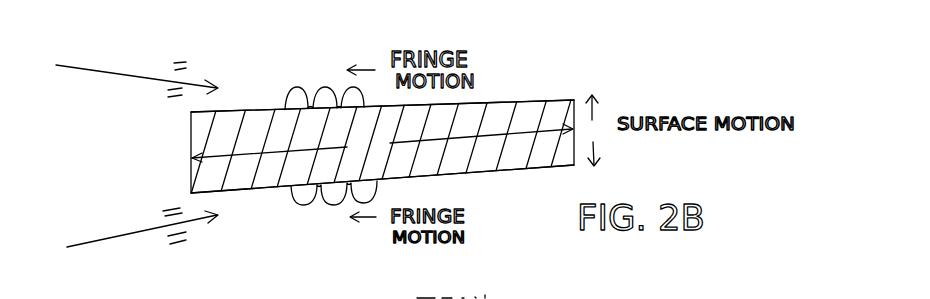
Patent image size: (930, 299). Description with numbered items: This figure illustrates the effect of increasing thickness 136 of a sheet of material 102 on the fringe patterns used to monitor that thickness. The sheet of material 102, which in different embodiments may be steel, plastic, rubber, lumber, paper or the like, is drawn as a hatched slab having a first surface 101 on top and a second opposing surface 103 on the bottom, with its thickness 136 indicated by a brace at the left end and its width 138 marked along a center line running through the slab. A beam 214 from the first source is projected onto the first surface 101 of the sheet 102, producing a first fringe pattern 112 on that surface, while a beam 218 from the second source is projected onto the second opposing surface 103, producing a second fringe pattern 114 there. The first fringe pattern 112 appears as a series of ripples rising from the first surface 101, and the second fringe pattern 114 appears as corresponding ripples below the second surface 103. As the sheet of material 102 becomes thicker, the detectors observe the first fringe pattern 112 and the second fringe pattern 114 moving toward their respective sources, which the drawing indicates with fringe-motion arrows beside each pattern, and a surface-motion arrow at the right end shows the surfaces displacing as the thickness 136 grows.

The first surface 101 is at (532, 100).
The sheet of material 102 is at (493, 84).
The second opposing surface 103 is at (522, 172).
The first fringe pattern 112 is at (286, 86).
The second fringe pattern 114 is at (294, 210).
The thickness 136 is at (183, 111).
The width 138 is at (382, 143).
The beam 214 is at (115, 72).
The beam 218 is at (115, 238).